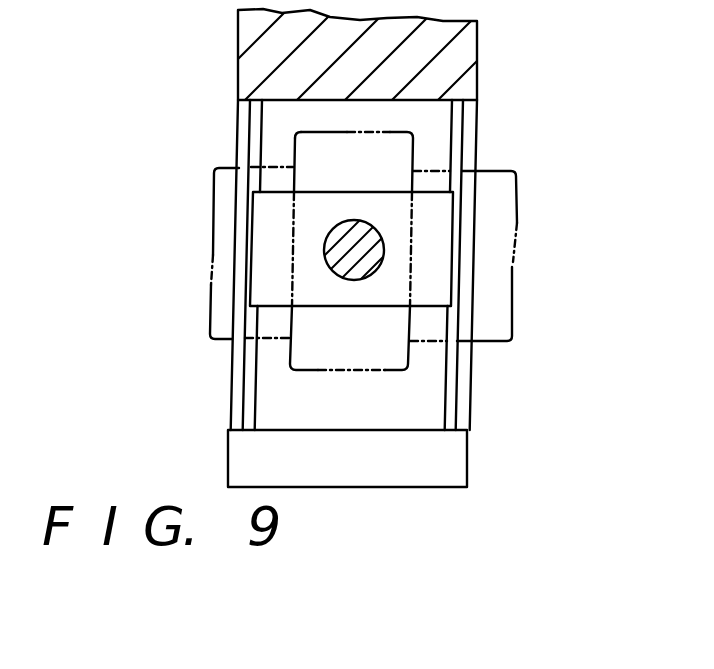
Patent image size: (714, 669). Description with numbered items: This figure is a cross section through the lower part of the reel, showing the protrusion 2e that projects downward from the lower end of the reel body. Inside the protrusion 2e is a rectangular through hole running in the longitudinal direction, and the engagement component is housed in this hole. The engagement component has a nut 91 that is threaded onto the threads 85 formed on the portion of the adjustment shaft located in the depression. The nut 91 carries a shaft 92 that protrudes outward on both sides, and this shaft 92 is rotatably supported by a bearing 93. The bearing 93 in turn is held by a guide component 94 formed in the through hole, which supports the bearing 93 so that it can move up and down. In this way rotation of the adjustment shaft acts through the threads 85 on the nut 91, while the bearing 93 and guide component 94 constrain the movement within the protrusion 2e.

The protrusion 2e is at (467, 42).
The threads 85 is at (507, 278).
The nut 91 is at (403, 142).
The shaft 92 is at (372, 243).
The bearing 93 is at (380, 205).
The guide component 94 is at (257, 365).